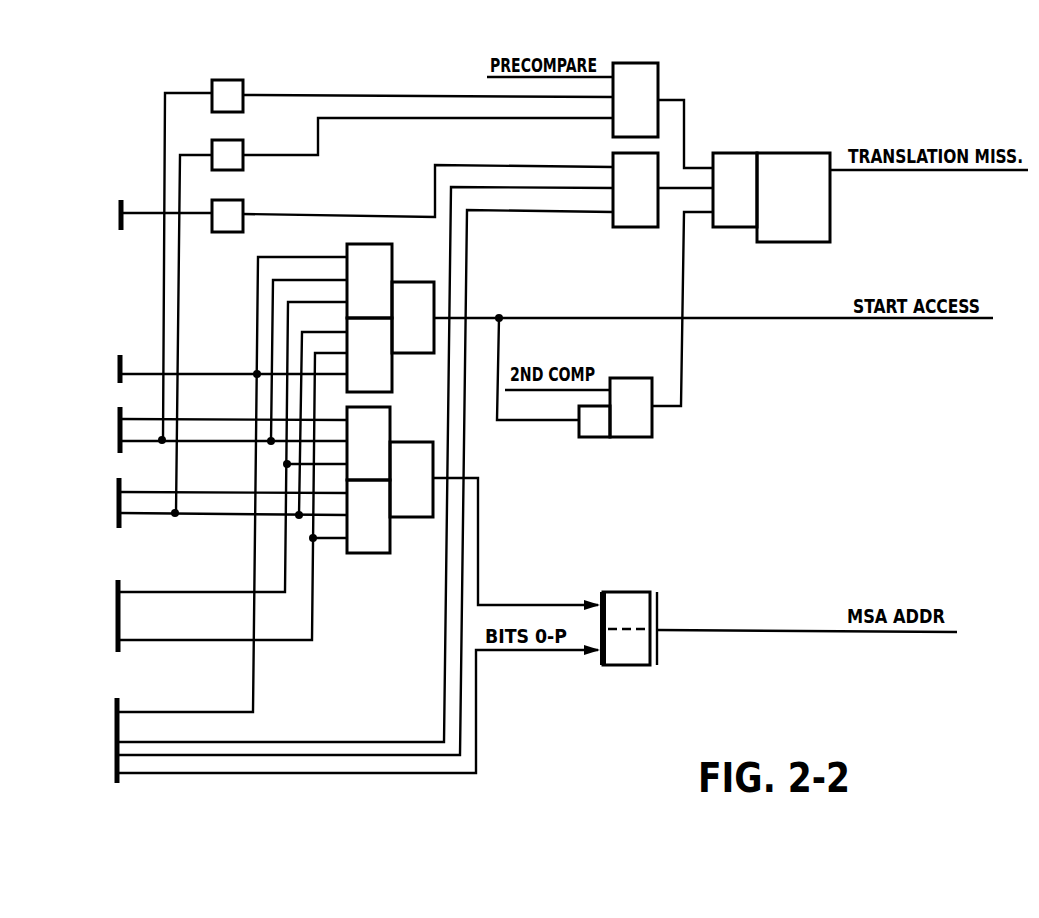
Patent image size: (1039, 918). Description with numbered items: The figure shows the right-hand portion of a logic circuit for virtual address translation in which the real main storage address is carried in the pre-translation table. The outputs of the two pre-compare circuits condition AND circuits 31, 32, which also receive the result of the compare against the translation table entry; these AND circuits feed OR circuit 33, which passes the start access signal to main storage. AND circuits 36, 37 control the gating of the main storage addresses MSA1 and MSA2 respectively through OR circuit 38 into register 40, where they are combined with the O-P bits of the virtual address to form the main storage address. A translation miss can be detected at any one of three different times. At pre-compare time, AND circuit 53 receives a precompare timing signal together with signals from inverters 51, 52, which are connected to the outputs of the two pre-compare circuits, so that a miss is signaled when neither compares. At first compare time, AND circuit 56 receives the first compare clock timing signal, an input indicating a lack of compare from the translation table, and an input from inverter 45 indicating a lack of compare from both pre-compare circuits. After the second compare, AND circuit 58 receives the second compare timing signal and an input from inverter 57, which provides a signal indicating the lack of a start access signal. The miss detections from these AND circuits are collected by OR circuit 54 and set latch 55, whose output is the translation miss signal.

The inverter 51 is at (227, 75).
The inverter 52 is at (250, 143).
The inverter 45 is at (227, 241).
The AND circuit 53 is at (626, 128).
The AND circuit 56 is at (626, 218).
The OR circuit 54 is at (745, 218).
The latch 55 is at (793, 175).
The AND circuit 31 is at (360, 309).
The AND circuit 32 is at (360, 383).
The OR circuit 33 is at (423, 345).
The AND circuit 37 is at (359, 471).
The AND circuit 36 is at (359, 544).
The OR circuit 38 is at (402, 507).
The AND circuit 58 is at (622, 431).
The inverter 57 is at (594, 444).
The register 40 is at (630, 602).